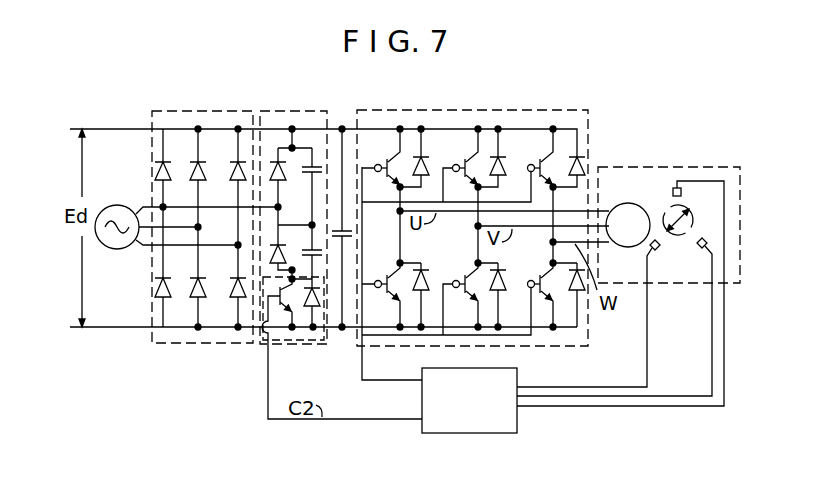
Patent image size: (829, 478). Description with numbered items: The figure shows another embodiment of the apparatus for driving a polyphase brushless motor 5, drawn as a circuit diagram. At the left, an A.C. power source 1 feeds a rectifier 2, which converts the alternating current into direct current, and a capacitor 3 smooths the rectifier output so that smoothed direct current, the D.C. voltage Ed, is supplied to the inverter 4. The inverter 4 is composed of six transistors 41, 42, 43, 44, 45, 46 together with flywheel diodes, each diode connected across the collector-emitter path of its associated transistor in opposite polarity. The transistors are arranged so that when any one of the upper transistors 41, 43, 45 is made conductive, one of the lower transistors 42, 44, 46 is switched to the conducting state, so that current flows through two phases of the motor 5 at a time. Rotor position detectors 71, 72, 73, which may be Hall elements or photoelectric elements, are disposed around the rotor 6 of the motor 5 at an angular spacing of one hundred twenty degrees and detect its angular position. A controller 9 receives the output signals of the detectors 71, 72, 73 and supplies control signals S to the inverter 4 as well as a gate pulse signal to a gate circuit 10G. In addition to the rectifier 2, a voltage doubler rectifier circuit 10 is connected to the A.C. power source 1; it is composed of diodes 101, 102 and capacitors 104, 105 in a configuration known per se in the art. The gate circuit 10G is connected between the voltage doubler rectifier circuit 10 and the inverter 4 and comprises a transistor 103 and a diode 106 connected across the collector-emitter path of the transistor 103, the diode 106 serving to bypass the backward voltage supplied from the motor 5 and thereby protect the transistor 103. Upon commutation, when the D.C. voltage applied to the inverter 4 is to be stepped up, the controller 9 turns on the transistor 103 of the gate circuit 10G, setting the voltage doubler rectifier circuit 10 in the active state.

The A.C. power source 1 is at (115, 205).
The rectifier 2 is at (187, 111).
The capacitor 3 is at (367, 228).
The inverter 4 is at (472, 245).
The polyphase brushless motor 5 is at (628, 271).
The rotor 6 is at (672, 215).
The controller 9 is at (462, 433).
The voltage doubler rectifier circuit 10 is at (313, 251).
The gate circuit 10G is at (342, 348).
The transistor 41 is at (397, 153).
The transistor 42 is at (397, 263).
The transistor 43 is at (470, 152).
The transistor 44 is at (468, 263).
The transistor 45 is at (543, 153).
The transistor 46 is at (543, 263).
The rotor position detector 71 is at (682, 194).
The rotor position detector 72 is at (699, 246).
The rotor position detector 73 is at (658, 248).
The diode 101 is at (283, 170).
The diode 102 is at (272, 250).
The transistor 103 is at (285, 334).
The capacitor 104 is at (322, 157).
The capacitor 105 is at (338, 222).
The diode 106 is at (320, 291).